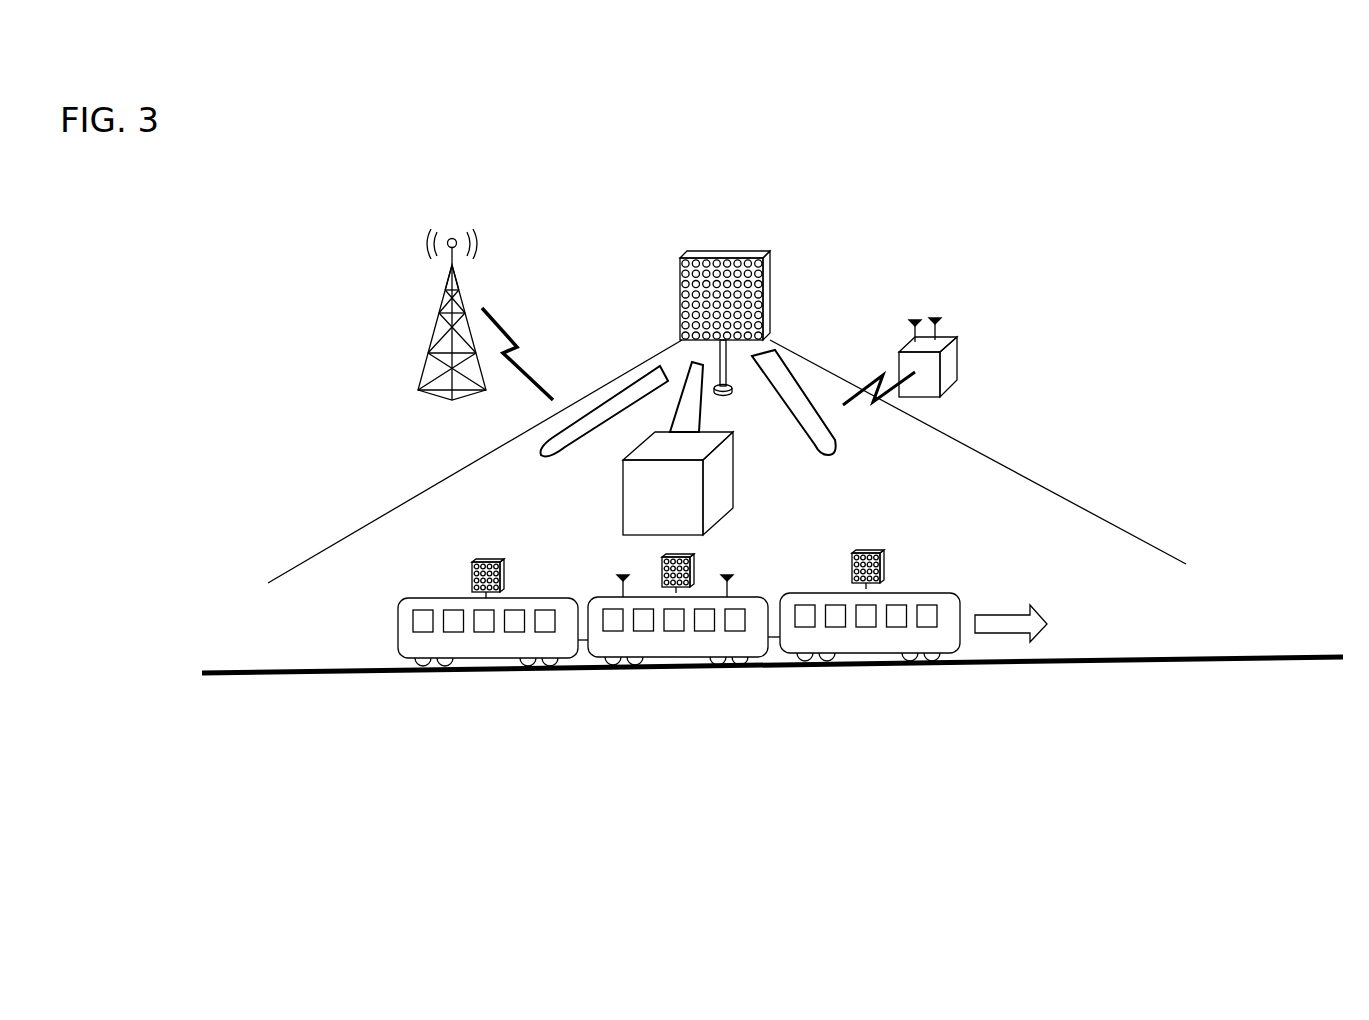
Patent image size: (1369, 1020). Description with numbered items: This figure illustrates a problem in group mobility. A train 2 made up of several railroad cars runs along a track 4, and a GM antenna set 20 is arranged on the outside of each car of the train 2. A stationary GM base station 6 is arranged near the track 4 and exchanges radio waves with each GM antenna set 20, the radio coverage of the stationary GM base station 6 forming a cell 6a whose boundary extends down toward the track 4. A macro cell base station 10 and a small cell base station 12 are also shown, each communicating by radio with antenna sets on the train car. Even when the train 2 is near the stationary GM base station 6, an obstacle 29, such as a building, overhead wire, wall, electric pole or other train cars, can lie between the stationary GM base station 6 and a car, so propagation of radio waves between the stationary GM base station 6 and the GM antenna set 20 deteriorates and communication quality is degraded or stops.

The train 2 is at (394, 649).
The track 4 is at (1255, 660).
The stationary GM base station 6 is at (678, 262).
The cell 6a is at (408, 500).
The macro cell base station 10 is at (445, 313).
The small cell base station 12 is at (950, 335).
The GM antenna set 20 is at (502, 582).
The obstacle 29 is at (727, 490).